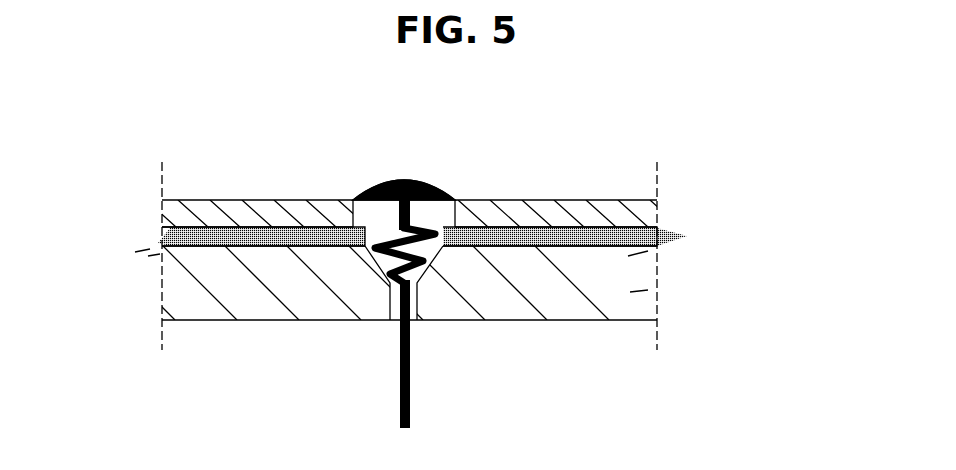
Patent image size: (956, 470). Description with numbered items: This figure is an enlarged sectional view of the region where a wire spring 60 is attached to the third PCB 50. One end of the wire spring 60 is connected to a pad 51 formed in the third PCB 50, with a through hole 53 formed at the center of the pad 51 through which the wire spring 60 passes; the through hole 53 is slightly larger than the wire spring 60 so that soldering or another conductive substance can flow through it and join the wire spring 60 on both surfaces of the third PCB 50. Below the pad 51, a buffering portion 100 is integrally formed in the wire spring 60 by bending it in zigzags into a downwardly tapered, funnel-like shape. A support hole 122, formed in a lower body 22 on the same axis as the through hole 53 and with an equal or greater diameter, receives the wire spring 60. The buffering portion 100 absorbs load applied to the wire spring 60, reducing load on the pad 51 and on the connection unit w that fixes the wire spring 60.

The connection unit w is at (387, 181).
The third PCB 50 is at (543, 200).
The pad 51 is at (433, 190).
The through hole 53 is at (387, 213).
The buffering portion 100 is at (441, 222).
The lower block 22 is at (598, 246).
The support hole 122 is at (418, 300).
The wire spring 60 is at (411, 383).